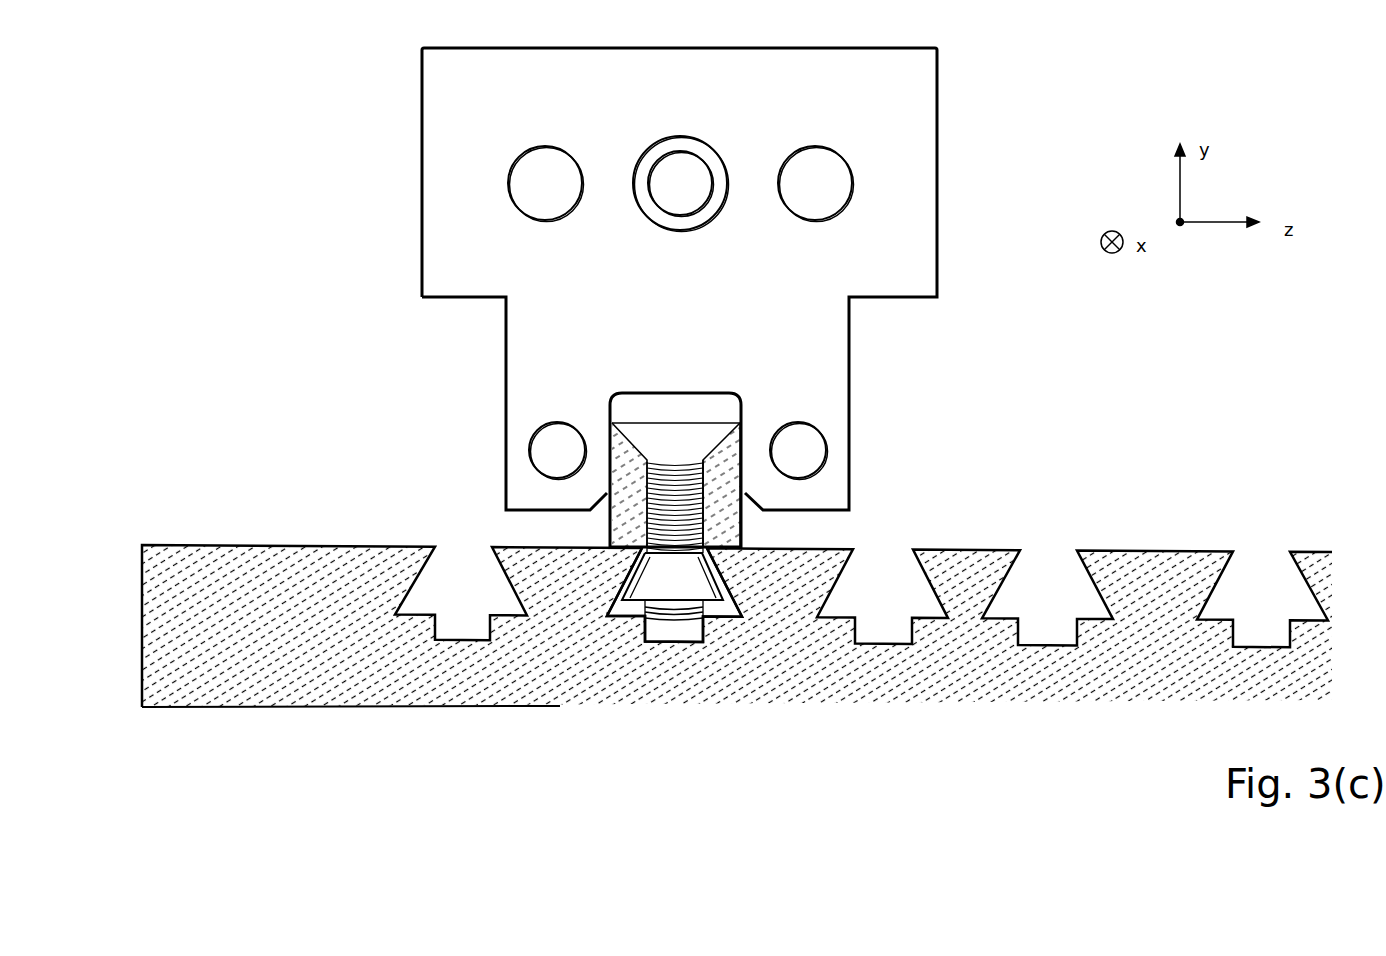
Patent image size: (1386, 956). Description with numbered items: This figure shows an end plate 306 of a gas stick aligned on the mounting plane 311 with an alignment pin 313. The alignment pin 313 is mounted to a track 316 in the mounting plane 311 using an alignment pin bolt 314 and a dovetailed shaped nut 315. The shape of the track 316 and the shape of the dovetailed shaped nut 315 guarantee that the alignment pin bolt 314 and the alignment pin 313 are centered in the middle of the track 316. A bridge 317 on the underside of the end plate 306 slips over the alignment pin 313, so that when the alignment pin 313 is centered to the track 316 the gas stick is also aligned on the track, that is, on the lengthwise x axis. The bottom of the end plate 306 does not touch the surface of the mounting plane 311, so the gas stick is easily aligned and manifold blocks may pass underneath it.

The end plate 306 is at (708, 95).
The bridge 317 is at (703, 388).
The alignment pin 313 is at (722, 529).
The alignment pin bolt 314 is at (668, 521).
The dovetailed shaped nut 315 is at (698, 587).
The track 316 is at (723, 643).
The mounting plane 311 is at (264, 679).